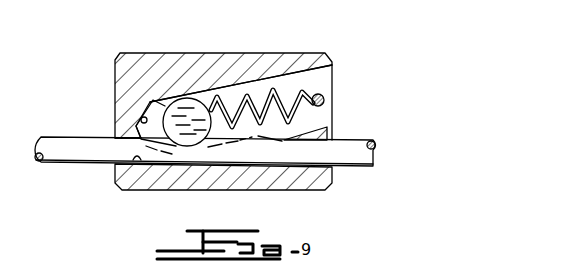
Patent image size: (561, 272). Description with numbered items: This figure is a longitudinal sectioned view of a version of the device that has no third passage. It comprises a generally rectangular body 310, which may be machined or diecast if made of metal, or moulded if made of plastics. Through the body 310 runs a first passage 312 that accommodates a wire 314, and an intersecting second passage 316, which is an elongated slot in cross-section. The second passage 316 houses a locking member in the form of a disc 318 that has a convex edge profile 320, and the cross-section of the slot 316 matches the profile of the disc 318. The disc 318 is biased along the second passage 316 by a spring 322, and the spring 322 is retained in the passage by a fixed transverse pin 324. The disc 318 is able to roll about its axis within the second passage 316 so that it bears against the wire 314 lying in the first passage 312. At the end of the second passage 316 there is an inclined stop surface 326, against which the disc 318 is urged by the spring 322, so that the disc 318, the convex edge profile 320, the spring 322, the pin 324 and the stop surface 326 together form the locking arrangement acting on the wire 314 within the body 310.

The body 310 is at (139, 62).
The first passage 312 is at (137, 161).
The wire 314 is at (345, 168).
The second passage 316 is at (283, 86).
The disc 318 is at (190, 116).
The convex edge profile 320 is at (152, 101).
The spring 322 is at (247, 94).
The fixed transverse pin 324 is at (325, 97).
The inclined stop surface 326 is at (141, 119).